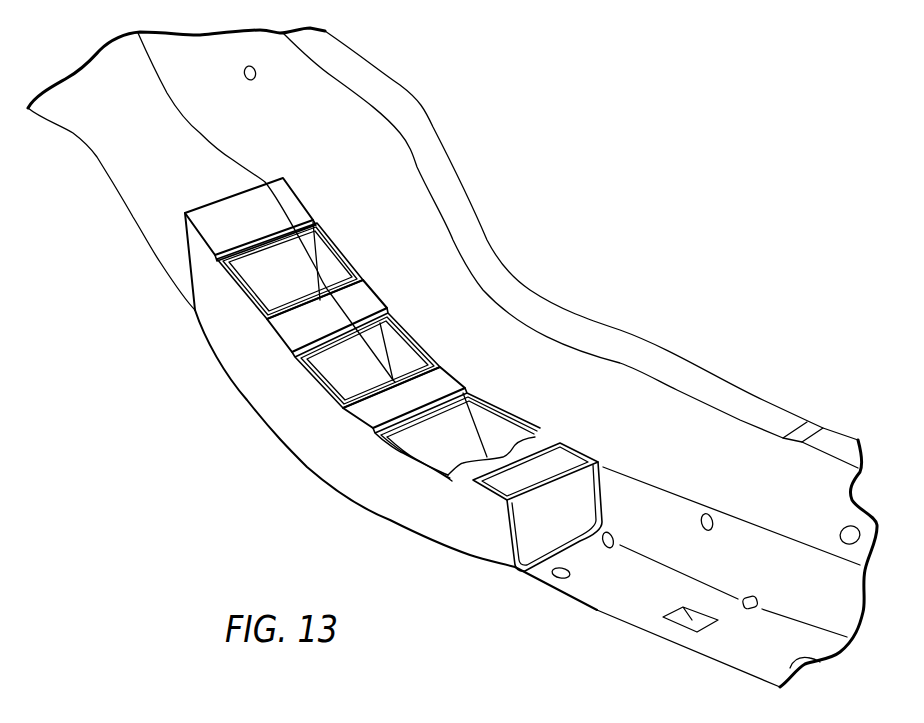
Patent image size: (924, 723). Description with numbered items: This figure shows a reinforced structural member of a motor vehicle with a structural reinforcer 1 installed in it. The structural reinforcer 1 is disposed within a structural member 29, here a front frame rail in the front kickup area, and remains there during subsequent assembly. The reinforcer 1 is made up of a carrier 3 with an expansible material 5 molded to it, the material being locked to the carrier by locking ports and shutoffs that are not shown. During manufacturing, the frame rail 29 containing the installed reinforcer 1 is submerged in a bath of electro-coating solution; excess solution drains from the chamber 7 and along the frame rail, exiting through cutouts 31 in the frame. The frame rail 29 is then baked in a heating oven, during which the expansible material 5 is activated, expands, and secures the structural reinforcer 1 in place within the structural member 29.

The structural reinforcer 1 is at (166, 238).
The carrier 3 is at (564, 501).
The expansible material 5 is at (340, 452).
The chamber 7 is at (463, 443).
The structural member 29 is at (640, 285).
The cutouts 31 is at (545, 580).